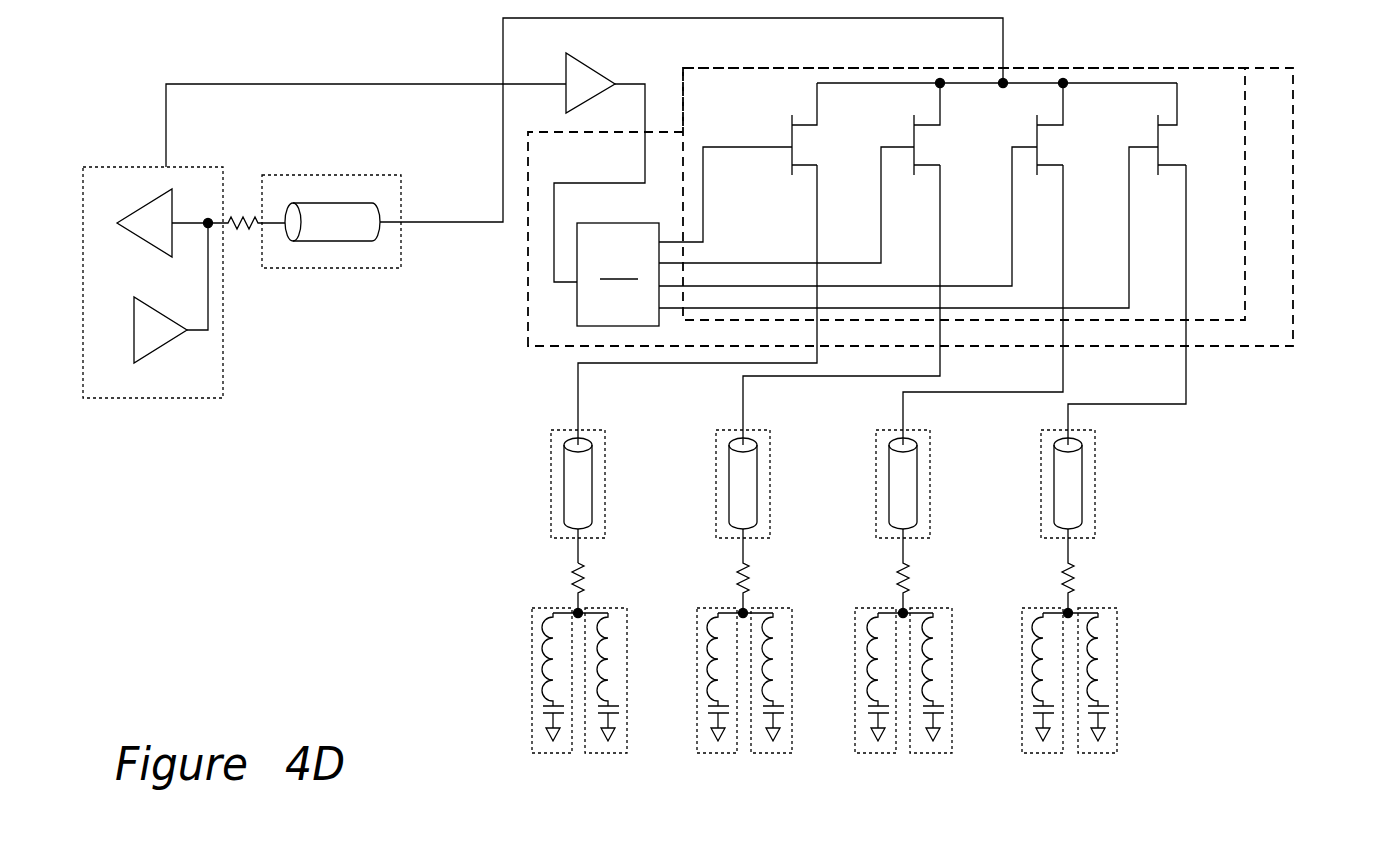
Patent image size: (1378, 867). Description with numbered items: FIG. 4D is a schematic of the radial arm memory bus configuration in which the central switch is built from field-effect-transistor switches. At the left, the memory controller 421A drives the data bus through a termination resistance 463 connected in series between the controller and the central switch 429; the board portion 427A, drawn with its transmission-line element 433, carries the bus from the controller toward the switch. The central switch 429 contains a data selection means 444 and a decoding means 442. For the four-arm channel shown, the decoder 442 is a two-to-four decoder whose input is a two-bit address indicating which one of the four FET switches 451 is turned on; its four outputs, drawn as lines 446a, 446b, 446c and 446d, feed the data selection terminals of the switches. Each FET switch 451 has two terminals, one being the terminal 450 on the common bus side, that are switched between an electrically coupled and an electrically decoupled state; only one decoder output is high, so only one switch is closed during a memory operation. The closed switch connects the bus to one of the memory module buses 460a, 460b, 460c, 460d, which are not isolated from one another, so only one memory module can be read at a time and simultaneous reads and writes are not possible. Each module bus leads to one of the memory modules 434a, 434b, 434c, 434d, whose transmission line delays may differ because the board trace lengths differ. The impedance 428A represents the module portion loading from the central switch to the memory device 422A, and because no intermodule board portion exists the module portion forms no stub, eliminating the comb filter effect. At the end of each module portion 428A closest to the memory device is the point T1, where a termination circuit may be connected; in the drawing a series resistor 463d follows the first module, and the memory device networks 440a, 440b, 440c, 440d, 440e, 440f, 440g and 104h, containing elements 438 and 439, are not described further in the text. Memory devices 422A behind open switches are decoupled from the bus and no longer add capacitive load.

The memory controller 421A is at (203, 399).
The termination resistance 463 is at (242, 236).
The transmission line 433 is at (323, 203).
The board portion 427A is at (312, 269).
The central switch 429 is at (1293, 228).
The data selection means 444 is at (1192, 68).
The terminal 450 is at (1064, 106).
The FET switch 451 is at (807, 146).
The decoding means 442 is at (618, 274).
The control line 446a is at (728, 243).
The control line 446b is at (786, 205).
The control line 446c is at (975, 262).
The control line 446d is at (1098, 306).
The memory module bus 460a is at (578, 392).
The memory module bus 460b is at (743, 392).
The memory module bus 460c is at (903, 416).
The memory module bus 460d is at (1068, 418).
The module portion impedance 428A is at (551, 514).
The memory module 434a is at (563, 477).
The memory module 434b is at (727, 478).
The memory module 434c is at (885, 478).
The memory module 434d is at (1053, 478).
The point T1 is at (566, 555).
The resistor 463d is at (587, 578).
The inductor 438 is at (541, 641).
The capacitor 439 is at (541, 711).
The memory device 422A is at (532, 743).
The LC filter network 440a is at (547, 754).
The LC filter network 440b is at (607, 754).
The LC filter network 440c is at (720, 754).
The LC filter network 440d is at (775, 754).
The LC filter network 440e is at (880, 754).
The LC filter network 440f is at (935, 754).
The LC filter network 440g is at (1048, 754).
The LC filter network 104h is at (1108, 754).